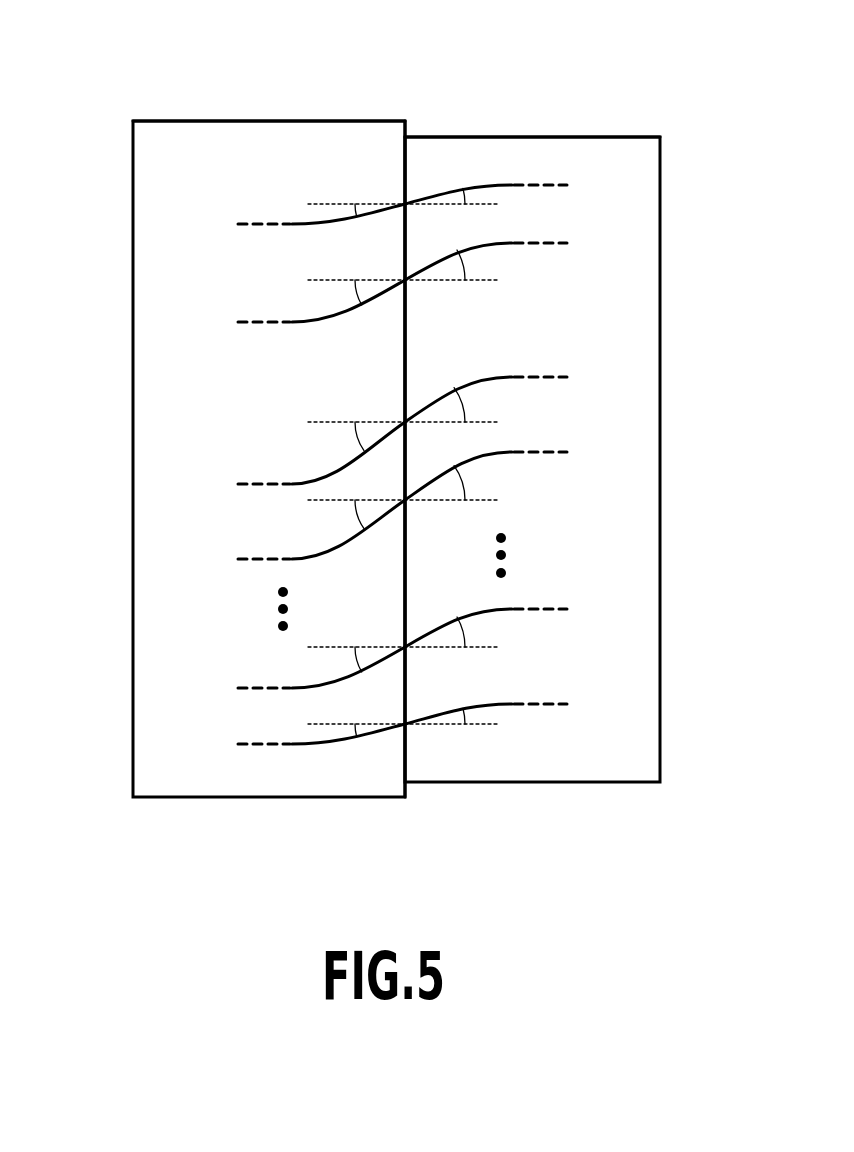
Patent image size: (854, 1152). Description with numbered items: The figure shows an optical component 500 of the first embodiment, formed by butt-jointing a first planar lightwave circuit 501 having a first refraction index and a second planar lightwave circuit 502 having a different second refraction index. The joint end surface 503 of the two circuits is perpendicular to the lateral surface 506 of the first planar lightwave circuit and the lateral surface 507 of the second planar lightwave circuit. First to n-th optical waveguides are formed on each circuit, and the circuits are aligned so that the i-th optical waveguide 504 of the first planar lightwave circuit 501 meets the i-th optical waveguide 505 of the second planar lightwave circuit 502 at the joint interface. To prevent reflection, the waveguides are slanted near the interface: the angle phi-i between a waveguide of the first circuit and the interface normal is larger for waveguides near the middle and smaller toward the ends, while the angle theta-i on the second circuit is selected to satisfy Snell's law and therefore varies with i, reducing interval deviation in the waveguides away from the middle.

The optical component 500 is at (322, 92).
The first planar lightwave circuit 501 is at (133, 197).
The second planar lightwave circuit 502 is at (660, 197).
The joint end surface 503 is at (405, 163).
The i-th optical waveguide of the first planar lightwave circuit 504 is at (318, 481).
The i-th optical waveguide of the second planar lightwave circuit 505 is at (488, 377).
The lateral surface of the first planar lightwave circuit 506 is at (197, 121).
The lateral surface of the second planar lightwave circuit 507 is at (591, 137).